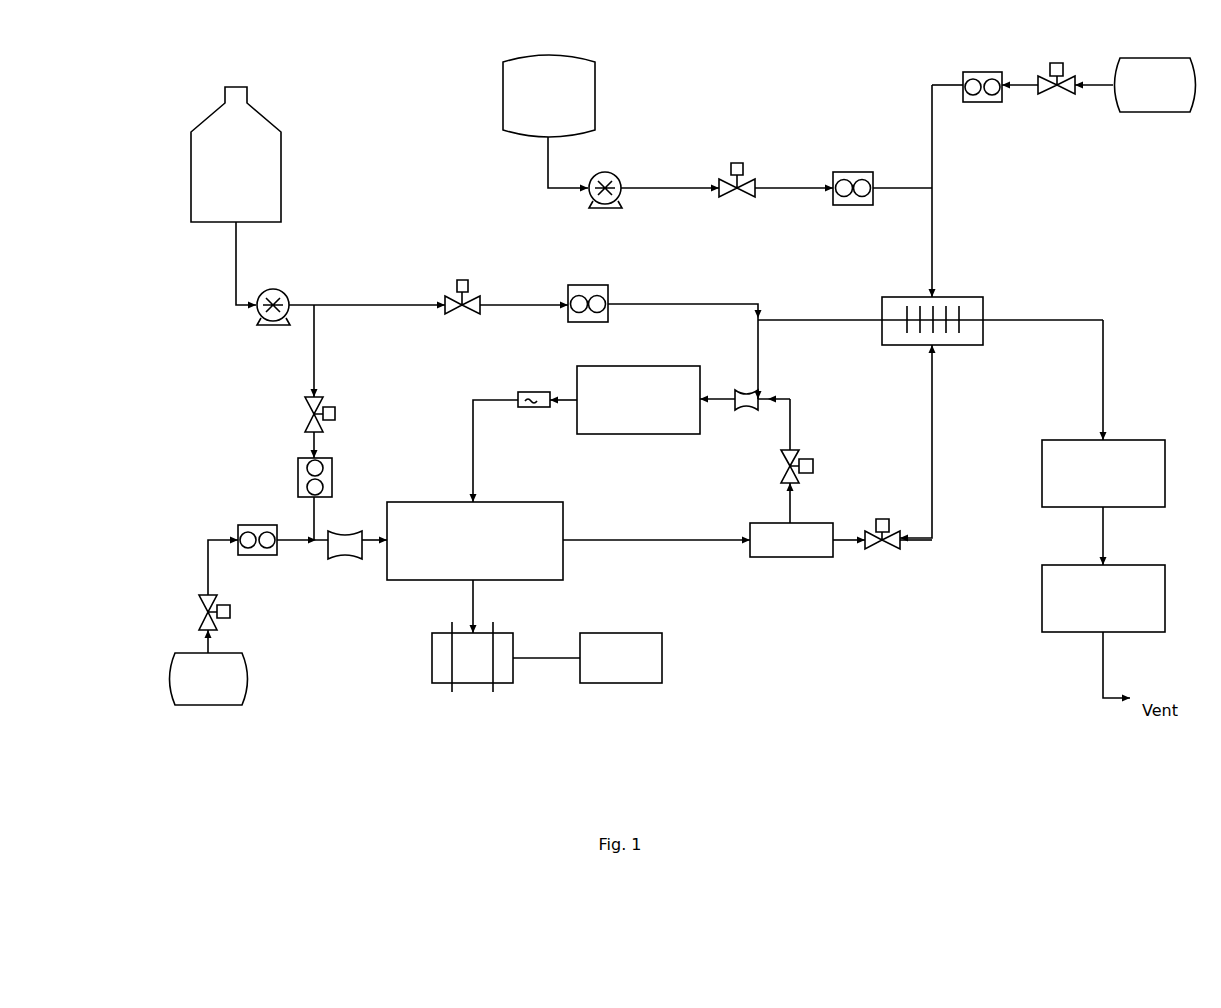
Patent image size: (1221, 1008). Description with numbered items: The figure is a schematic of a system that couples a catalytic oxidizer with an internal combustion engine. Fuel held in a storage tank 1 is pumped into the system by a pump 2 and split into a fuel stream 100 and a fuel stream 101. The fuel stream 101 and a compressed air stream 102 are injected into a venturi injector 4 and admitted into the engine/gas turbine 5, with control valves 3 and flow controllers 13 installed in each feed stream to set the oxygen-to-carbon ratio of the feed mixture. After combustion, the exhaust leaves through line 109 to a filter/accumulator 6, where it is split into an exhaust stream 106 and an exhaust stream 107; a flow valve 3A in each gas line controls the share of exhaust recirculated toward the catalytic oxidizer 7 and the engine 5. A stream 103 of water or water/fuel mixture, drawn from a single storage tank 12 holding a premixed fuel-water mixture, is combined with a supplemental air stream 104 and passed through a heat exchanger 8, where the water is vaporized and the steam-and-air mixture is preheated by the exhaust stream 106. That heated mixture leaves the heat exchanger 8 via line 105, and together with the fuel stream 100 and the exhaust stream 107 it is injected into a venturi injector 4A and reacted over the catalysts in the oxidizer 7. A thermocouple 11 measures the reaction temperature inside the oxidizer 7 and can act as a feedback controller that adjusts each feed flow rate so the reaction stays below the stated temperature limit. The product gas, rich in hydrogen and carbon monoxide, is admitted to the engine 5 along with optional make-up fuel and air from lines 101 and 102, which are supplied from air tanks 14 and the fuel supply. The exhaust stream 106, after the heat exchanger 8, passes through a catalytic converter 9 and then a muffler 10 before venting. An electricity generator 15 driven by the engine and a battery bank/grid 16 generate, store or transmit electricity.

The storage tank 1 is at (236, 154).
The pump 2 is at (439, 236).
The control valve 3 is at (628, 340).
The flow valve 3A is at (840, 489).
The venturi injector 4 is at (345, 535).
The venturi injector 4A is at (746, 412).
The engine/gas turbine 5 is at (475, 541).
The filter/accumulator 6 is at (791, 540).
The catalytic oxidizer 7 is at (638, 400).
The heat exchanger 8 is at (932, 321).
The catalytic converter 9 is at (1103, 473).
The muffler 10 is at (1103, 598).
The thermocouple 11 is at (534, 390).
The storage tank 12 is at (549, 96).
The flow controller 13 is at (620, 301).
The air tank 14 is at (683, 381).
The electricity generator 15 is at (432, 662).
The battery bank/grid 16 is at (627, 646).
The fuel stream 100 is at (367, 294).
The fuel stream 101 is at (330, 351).
The compressed air stream 102 is at (205, 566).
The water or water/fuel stream 103 is at (553, 164).
The supplemental air stream 104 is at (912, 191).
The line 105 is at (741, 359).
The exhaust stream 106 is at (915, 443).
The exhaust stream 107 is at (794, 423).
The exhaust line 109 is at (656, 531).